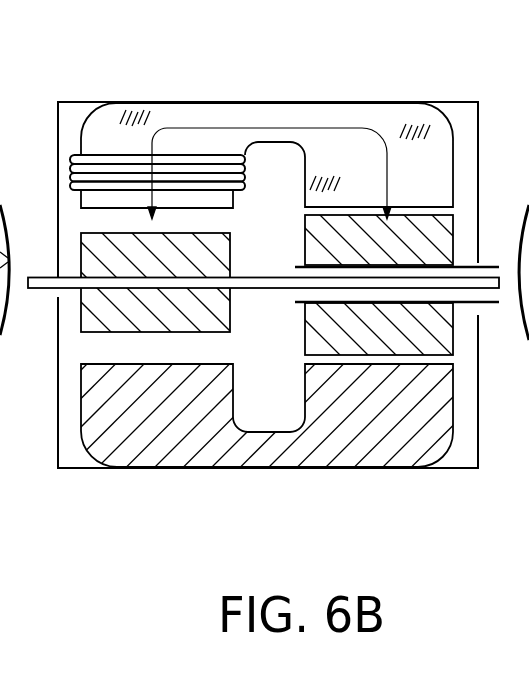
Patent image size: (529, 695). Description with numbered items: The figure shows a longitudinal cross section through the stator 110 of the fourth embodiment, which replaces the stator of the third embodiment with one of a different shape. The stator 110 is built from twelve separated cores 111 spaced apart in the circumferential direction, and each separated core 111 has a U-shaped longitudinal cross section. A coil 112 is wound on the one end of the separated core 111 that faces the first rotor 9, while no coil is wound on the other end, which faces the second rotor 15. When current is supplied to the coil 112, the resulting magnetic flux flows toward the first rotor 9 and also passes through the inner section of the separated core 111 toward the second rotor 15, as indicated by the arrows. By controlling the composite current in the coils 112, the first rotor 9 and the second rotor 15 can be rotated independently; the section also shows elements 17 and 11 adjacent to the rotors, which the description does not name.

The stator 110 is at (214, 103).
The separated cores 111 is at (263, 115).
The coil 112 is at (72, 160).
The first rotor 9 is at (88, 242).
The second rotor 15 is at (443, 247).
The lower fixed plate 17 is at (487, 303).
The shaft 11 is at (42, 289).